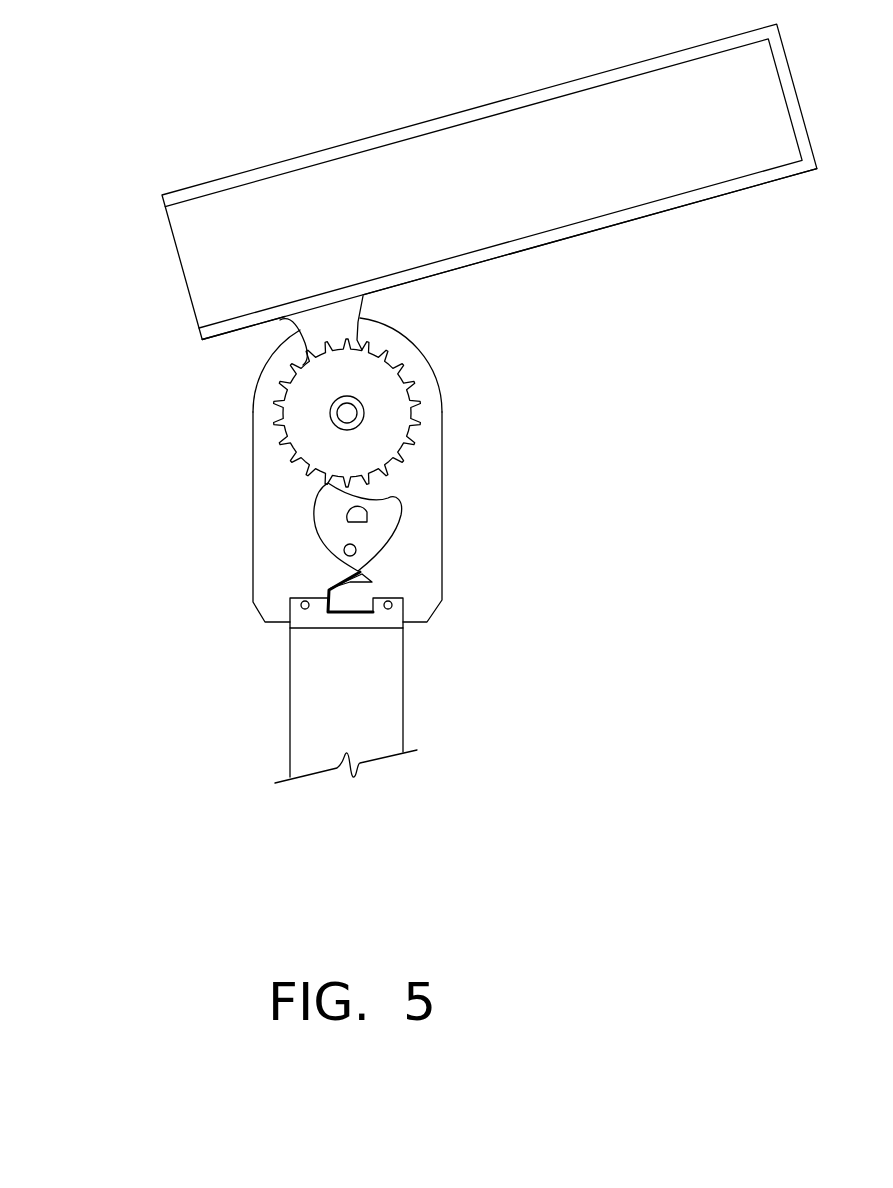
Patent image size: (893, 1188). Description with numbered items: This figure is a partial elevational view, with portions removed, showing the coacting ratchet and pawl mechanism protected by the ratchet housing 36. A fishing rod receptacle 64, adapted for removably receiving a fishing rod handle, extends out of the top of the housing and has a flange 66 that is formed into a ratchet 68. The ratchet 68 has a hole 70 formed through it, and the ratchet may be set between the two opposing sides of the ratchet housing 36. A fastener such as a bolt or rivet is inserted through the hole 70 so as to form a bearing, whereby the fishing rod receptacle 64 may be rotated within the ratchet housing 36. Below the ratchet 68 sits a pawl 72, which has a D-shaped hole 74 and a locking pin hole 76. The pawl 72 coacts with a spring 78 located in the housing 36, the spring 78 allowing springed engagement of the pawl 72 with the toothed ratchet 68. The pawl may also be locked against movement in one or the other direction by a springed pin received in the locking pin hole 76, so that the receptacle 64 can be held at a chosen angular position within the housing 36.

The ratchet housing 36 is at (433, 577).
The fishing rod receptacle 64 is at (357, 137).
The flange 66 is at (337, 330).
The ratchet 68 is at (280, 419).
The hole 70 is at (347, 413).
The pawl 72 is at (315, 510).
The D-shaped hole 74 is at (367, 515).
The locking pin hole 76 is at (343, 549).
The spring 78 is at (330, 590).